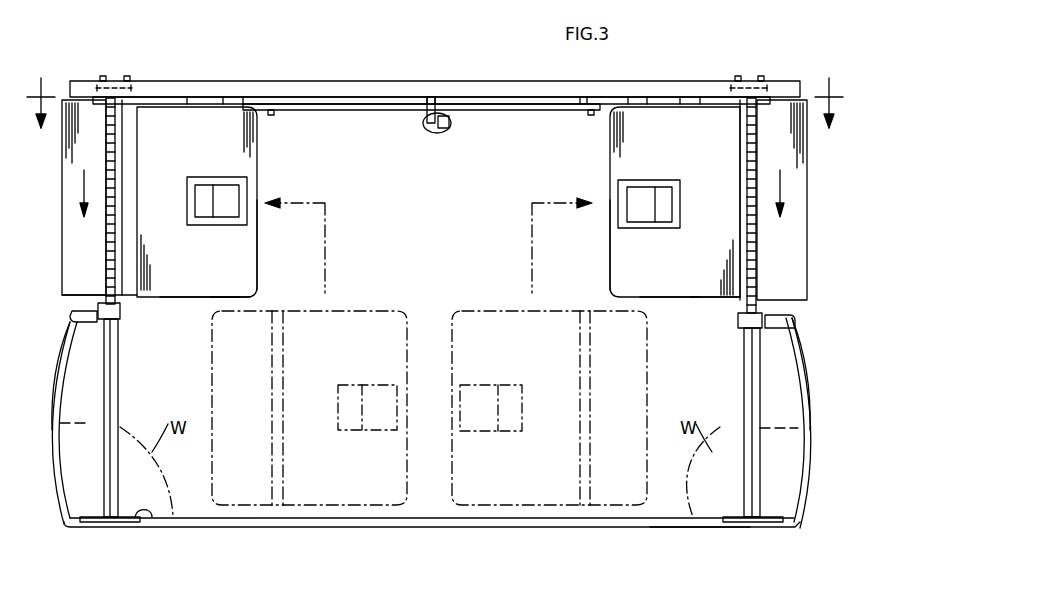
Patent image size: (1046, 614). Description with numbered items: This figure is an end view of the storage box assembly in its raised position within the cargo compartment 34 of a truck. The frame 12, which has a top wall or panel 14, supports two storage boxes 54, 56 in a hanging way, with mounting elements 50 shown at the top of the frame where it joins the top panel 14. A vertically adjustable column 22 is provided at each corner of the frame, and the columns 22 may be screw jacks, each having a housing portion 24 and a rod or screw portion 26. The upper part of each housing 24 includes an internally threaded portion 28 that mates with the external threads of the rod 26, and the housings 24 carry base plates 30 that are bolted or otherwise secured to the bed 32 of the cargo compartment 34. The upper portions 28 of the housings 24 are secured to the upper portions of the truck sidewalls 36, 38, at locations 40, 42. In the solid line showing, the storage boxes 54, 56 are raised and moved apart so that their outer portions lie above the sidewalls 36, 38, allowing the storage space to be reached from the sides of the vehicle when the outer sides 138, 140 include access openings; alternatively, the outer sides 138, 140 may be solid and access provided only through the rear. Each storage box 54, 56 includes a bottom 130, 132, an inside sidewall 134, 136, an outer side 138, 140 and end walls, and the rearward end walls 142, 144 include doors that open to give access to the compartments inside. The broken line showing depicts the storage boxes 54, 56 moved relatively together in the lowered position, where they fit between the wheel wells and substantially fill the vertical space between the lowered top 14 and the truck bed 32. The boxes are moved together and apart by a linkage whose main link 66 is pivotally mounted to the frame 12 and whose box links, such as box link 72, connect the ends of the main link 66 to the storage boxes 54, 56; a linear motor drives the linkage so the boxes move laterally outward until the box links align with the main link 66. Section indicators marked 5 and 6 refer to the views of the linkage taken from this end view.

The frame 12 is at (498, 81).
The top wall or panel 14 is at (315, 82).
The mounting bolts 50 is at (140, 82).
The center or main link 66 is at (353, 112).
The box link 72 is at (436, 134).
The section line 5 is at (39, 116).
The section line 6 is at (827, 116).
The outer side 138 is at (62, 192).
The outer side 140 is at (806, 228).
The rod or screw portion 26 is at (107, 253).
The storage box 54 is at (243, 143).
The storage box 56 is at (612, 137).
The bottom 130 is at (183, 298).
The rearward end wall 142 is at (232, 299).
The inside sidewall 134 is at (259, 259).
The inside sidewall 136 is at (610, 238).
The rearward end wall 144 is at (662, 285).
The bottom 132 is at (708, 300).
The internally threaded portion 28 is at (117, 321).
The location 40 is at (78, 318).
The location 42 is at (795, 322).
The vertically adjustable column 22 is at (70, 480).
The sidewall 36 is at (52, 405).
The sidewall 38 is at (808, 392).
The bottom wall or bed 32 is at (432, 522).
The cargo compartment 34 is at (675, 490).
The housing portion 24 is at (108, 492).
The base plate 30 is at (148, 518).